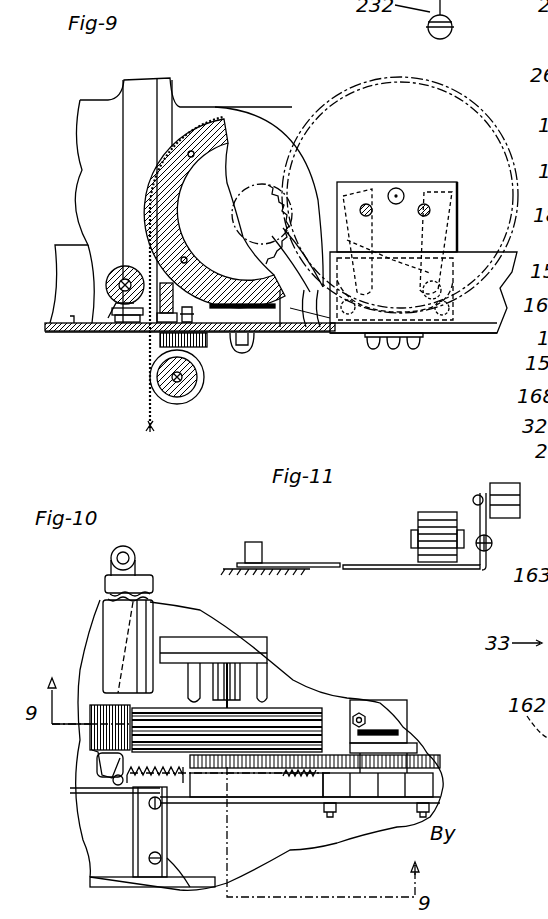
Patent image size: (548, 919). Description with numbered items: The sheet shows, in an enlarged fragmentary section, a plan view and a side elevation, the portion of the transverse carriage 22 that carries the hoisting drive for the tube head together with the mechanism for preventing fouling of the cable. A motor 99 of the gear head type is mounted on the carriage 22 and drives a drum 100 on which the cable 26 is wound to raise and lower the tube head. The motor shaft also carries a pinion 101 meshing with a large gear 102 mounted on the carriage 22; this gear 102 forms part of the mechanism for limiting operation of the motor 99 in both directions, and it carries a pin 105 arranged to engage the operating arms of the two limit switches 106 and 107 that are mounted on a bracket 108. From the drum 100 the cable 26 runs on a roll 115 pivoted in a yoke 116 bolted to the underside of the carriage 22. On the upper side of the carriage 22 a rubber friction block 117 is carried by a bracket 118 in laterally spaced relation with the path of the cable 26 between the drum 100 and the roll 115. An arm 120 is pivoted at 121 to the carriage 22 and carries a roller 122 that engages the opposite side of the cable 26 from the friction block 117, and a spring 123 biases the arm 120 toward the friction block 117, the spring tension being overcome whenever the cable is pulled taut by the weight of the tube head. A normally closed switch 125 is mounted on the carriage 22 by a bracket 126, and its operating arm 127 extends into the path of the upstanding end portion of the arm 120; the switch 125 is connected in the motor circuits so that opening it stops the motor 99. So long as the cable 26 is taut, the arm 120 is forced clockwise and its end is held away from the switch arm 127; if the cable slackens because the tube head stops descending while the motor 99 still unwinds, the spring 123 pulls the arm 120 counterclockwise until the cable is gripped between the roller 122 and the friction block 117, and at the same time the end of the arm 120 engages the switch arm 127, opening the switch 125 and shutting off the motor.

In FIG. 9, the motor 99 is at (105, 105).
In FIG. 10, the motor 99 is at (213, 636).
In FIG. 9, the drum 100 is at (212, 124).
In FIG. 10, the drum 100 is at (292, 710).
In FIG. 9, the pinion 101 is at (260, 186).
In FIG. 10, the pinion 101 is at (237, 790).
In FIG. 9, the large gear 102 is at (362, 90).
In FIG. 10, the large gear 102 is at (437, 754).
In FIG. 9, the pin 105 is at (430, 330).
In FIG. 9, the limit switch 106 is at (348, 196).
In FIG. 10, the limit switch 106 is at (362, 790).
In FIG. 9, the limit switch 107 is at (440, 196).
In FIG. 10, the limit switch 107 is at (420, 788).
In FIG. 9, the bracket 108 is at (413, 184).
In FIG. 9, the roll 115 is at (182, 404).
In FIG. 9, the yoke 116 is at (212, 362).
In FIG. 9, the rubber friction block 117 is at (146, 236).
In FIG. 9, the bracket 118 is at (248, 332).
In FIG. 9, the arm 120 is at (118, 312).
In FIG. 11, the arm 120 is at (352, 561).
In FIG. 10, the arm 120 is at (93, 767).
In FIG. 11, the pivot 121 is at (250, 558).
In FIG. 10, the pivot 121 is at (112, 559).
In FIG. 9, the roller 122 is at (112, 272).
In FIG. 11, the roller 122 is at (430, 520).
In FIG. 10, the roller 122 is at (85, 737).
In FIG. 11, the spring 123 is at (490, 553).
In FIG. 10, the spring 123 is at (303, 797).
In FIG. 11, the normally closed switch 125 is at (498, 485).
In FIG. 10, the normally closed switch 125 is at (140, 860).
In FIG. 10, the bracket 126 is at (167, 858).
In FIG. 11, the operating arm 127 is at (477, 500).
In FIG. 10, the operating arm 127 is at (127, 803).
In FIG. 9, the transverse carriage 22 is at (72, 325).
In FIG. 9, the cable 26 is at (145, 414).
In FIG. 10, the cable 26 is at (343, 707).